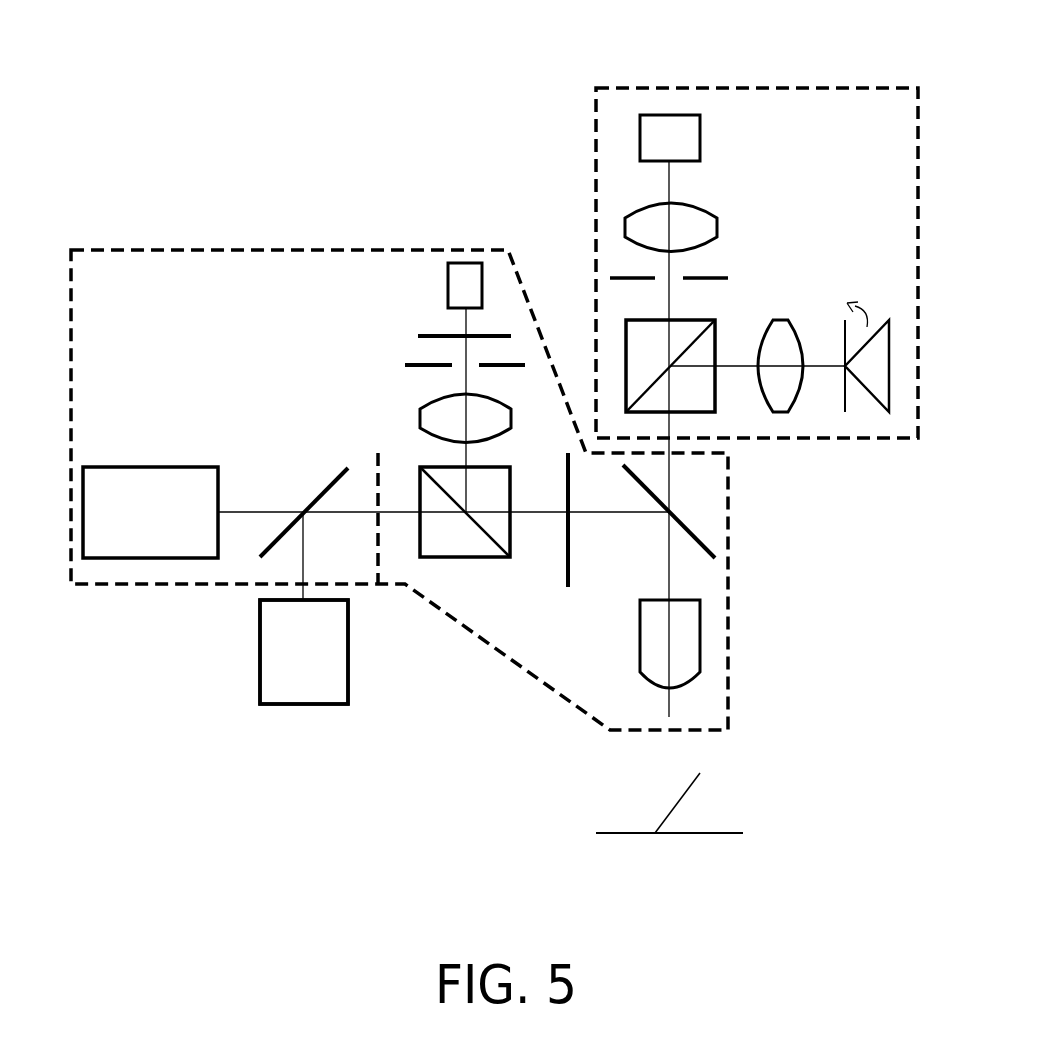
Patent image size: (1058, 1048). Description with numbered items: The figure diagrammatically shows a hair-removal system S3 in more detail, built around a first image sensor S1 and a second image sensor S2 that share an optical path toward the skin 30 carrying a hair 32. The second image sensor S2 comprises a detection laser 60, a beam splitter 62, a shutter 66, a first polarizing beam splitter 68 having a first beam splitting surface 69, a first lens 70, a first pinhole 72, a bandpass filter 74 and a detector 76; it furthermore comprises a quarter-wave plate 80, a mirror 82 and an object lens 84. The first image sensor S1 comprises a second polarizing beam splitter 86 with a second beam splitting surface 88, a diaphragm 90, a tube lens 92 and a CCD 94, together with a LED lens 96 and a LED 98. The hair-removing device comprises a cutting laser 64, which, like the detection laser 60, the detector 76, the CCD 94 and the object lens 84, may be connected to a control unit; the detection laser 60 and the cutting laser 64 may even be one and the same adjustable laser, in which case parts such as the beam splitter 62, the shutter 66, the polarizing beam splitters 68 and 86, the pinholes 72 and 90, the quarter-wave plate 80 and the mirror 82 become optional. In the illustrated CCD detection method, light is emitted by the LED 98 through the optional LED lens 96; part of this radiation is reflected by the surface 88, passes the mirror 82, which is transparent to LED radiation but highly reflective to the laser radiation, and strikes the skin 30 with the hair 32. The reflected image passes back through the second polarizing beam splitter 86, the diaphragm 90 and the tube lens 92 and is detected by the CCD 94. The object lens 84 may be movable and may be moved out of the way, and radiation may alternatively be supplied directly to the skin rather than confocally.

The first image sensor S1 is at (787, 88).
The second image sensor S2 is at (197, 250).
The hair-removal system S3 is at (225, 712).
The skin 30 is at (733, 832).
The hair 32 is at (695, 787).
The detection laser 60 is at (160, 467).
The beam splitter 62 is at (320, 496).
The cutting laser 64 is at (318, 705).
The shutter 66 is at (380, 563).
The first polarizing beam splitter 68 is at (440, 558).
The first beam splitting surface 69 is at (490, 540).
The first lens 70 is at (420, 418).
The first pinhole 72 is at (420, 365).
The bandpass filter 74 is at (425, 334).
The detector 76 is at (448, 280).
The λ/4 plate 80 is at (565, 575).
The mirror 82 is at (712, 548).
The object lens 84 is at (700, 632).
The second polarizing beam splitter 86 is at (626, 335).
The second beam splitting surface 88 is at (650, 385).
The diaphragm 90 is at (610, 278).
The tube lens 92 is at (625, 227).
The CCD 94 is at (640, 138).
The LED lens 96 is at (780, 320).
The LED 98 is at (884, 322).